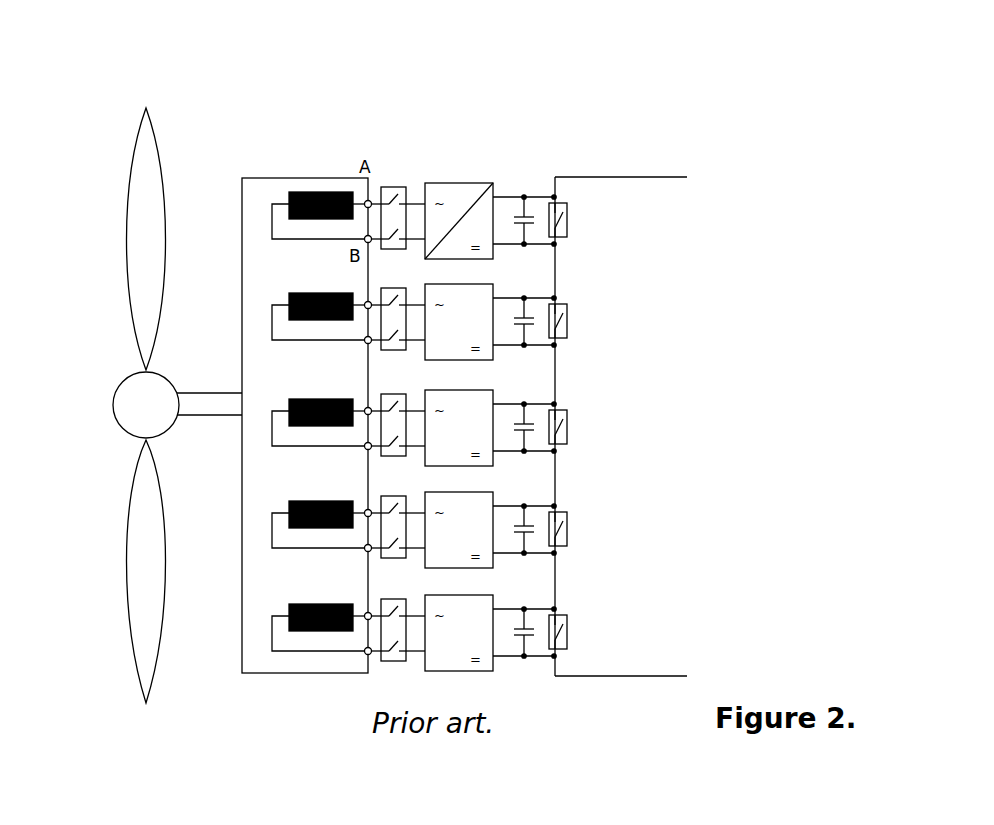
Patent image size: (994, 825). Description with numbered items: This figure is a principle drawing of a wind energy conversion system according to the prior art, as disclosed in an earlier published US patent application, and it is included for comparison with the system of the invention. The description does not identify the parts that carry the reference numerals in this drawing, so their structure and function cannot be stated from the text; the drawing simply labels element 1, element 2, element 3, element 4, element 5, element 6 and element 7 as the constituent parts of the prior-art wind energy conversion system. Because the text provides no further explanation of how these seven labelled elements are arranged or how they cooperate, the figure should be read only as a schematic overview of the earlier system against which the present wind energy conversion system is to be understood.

The wind turbine rotor 1 is at (145, 110).
The generator 2 is at (292, 178).
The generator winding segment 3 is at (333, 192).
The power converter 4 is at (458, 183).
The DC link capacitor 5 is at (513, 203).
The DC switch 6 is at (568, 205).
The AC switch unit 7 is at (386, 187).